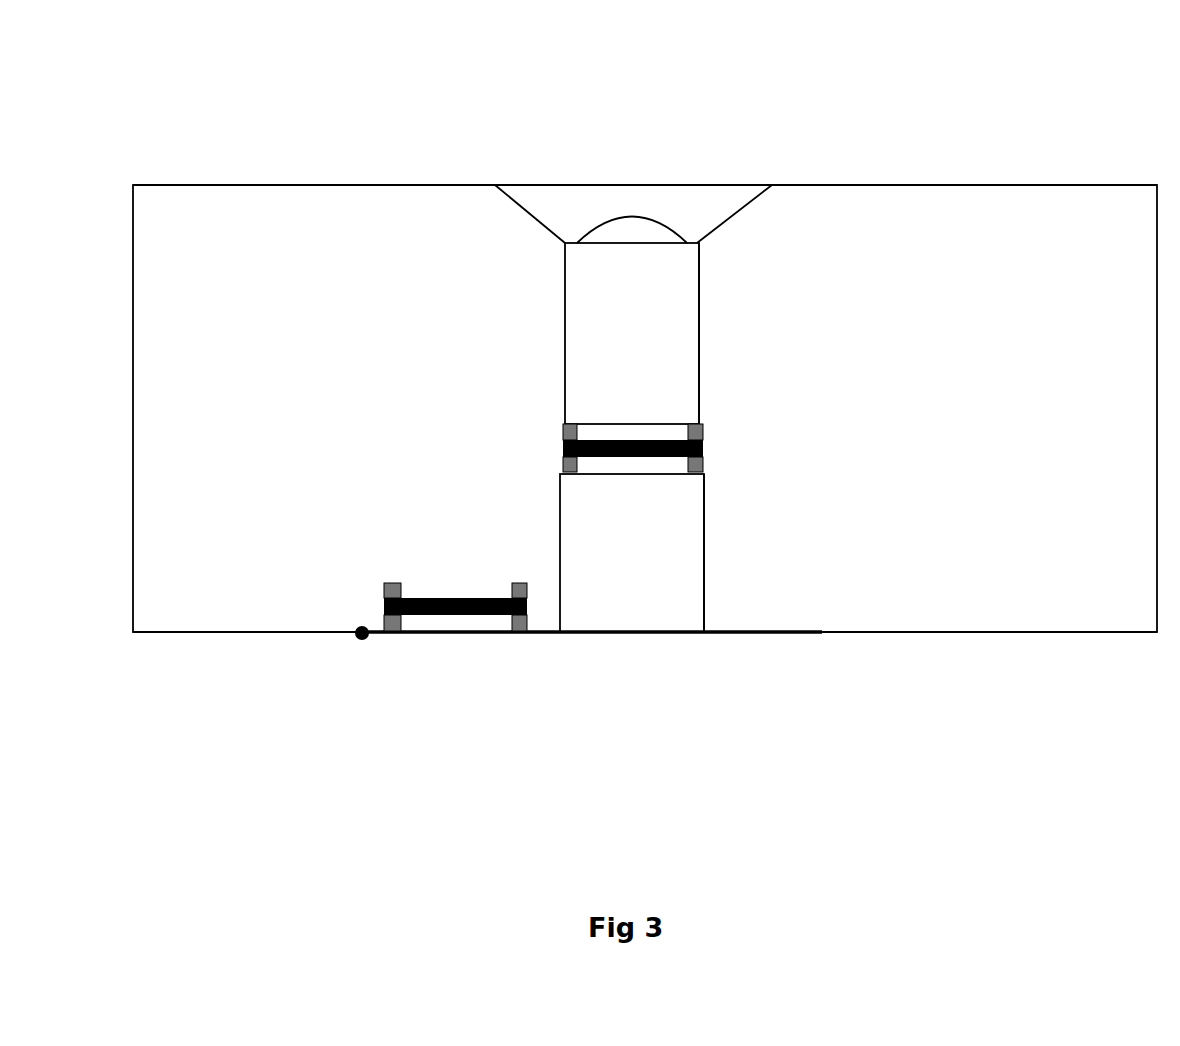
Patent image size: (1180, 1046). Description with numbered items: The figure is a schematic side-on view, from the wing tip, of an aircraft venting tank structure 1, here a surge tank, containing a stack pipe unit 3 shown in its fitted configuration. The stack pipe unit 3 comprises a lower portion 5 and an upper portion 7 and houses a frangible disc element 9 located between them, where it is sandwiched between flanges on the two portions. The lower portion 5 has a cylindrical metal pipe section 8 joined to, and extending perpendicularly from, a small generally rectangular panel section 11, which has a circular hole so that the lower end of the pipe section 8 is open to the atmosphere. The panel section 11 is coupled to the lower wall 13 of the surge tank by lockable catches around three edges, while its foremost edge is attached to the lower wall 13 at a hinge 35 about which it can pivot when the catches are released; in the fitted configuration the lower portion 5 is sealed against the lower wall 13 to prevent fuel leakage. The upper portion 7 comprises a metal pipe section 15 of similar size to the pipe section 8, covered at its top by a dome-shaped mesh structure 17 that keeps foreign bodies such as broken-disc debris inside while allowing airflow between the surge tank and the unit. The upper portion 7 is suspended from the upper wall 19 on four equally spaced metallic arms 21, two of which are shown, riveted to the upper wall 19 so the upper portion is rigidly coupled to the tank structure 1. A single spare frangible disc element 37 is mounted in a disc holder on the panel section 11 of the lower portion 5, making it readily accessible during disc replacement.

The venting tank structure 1 is at (326, 388).
The stack pipe unit 3 is at (668, 407).
The lower portion 5 is at (708, 568).
The upper portion 7 is at (702, 358).
The pipe section 8 is at (627, 555).
The frangible disc element 9 is at (707, 457).
The panel section 11 is at (542, 638).
The lower wall 13 is at (182, 633).
The pipe section 15 is at (636, 328).
The dome-shaped mesh structure 17 is at (630, 212).
The upper wall 19 is at (197, 185).
The metallic arms 21 is at (523, 214).
The hinge 35 is at (358, 629).
The spare frangible disc element 37 is at (415, 618).